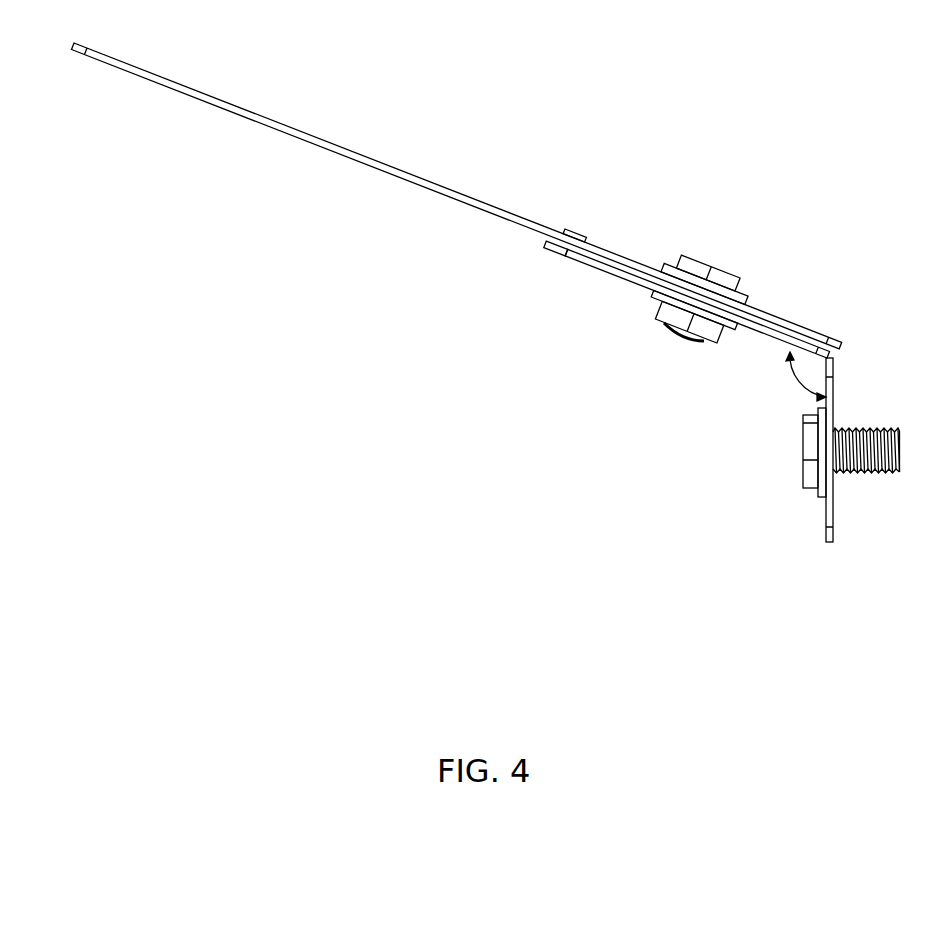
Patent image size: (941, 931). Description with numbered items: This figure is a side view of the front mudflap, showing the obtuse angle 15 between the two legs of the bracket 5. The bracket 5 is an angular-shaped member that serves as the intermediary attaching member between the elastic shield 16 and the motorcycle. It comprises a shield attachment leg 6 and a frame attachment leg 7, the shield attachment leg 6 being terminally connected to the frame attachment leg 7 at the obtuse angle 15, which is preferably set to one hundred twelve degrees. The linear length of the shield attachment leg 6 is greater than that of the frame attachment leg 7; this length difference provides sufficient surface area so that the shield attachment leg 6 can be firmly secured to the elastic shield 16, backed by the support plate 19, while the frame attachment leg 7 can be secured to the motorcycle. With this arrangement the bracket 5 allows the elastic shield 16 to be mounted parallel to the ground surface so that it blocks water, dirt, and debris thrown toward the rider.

The elastic shield 16 is at (287, 126).
The support plate 19 is at (776, 321).
The shield attachment leg 6 is at (571, 257).
The obtuse angle 15 is at (797, 378).
The frame attachment leg 7 is at (831, 512).
The bracket 5 is at (654, 418).